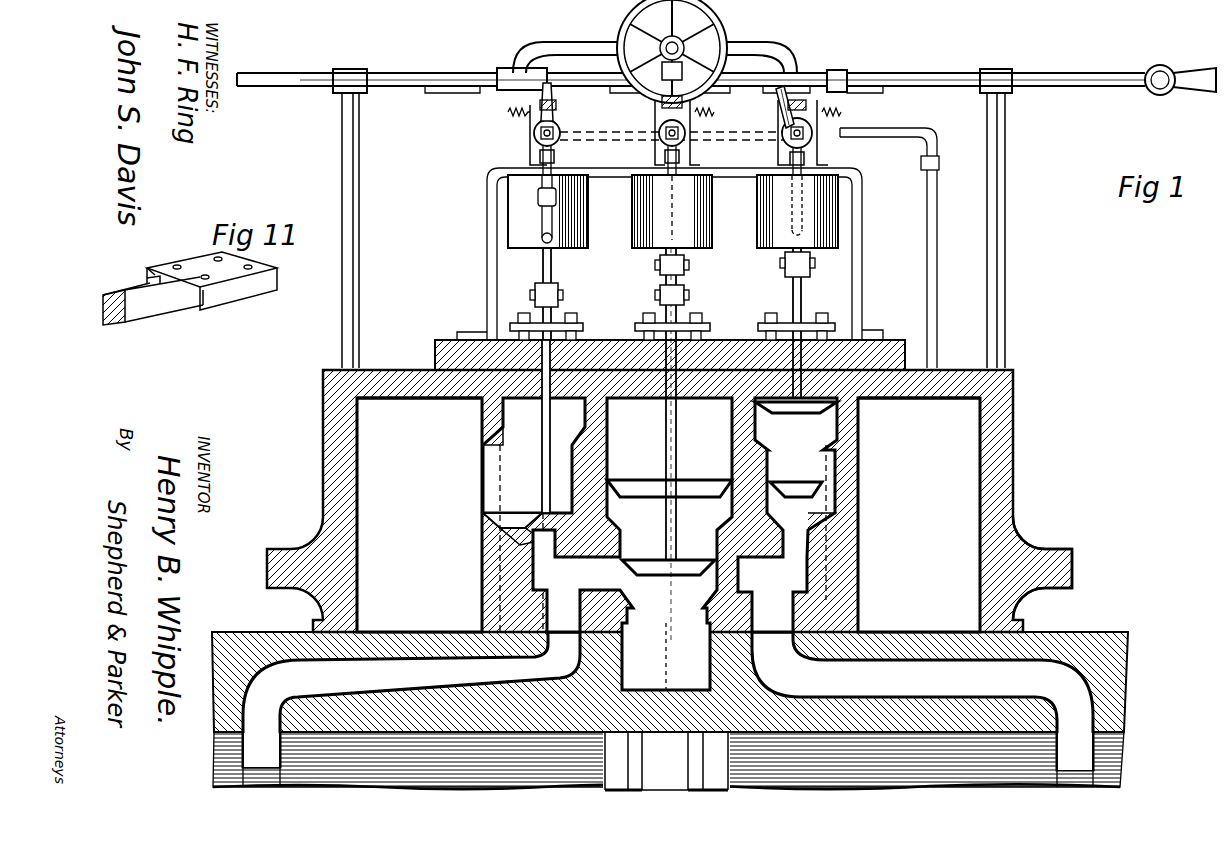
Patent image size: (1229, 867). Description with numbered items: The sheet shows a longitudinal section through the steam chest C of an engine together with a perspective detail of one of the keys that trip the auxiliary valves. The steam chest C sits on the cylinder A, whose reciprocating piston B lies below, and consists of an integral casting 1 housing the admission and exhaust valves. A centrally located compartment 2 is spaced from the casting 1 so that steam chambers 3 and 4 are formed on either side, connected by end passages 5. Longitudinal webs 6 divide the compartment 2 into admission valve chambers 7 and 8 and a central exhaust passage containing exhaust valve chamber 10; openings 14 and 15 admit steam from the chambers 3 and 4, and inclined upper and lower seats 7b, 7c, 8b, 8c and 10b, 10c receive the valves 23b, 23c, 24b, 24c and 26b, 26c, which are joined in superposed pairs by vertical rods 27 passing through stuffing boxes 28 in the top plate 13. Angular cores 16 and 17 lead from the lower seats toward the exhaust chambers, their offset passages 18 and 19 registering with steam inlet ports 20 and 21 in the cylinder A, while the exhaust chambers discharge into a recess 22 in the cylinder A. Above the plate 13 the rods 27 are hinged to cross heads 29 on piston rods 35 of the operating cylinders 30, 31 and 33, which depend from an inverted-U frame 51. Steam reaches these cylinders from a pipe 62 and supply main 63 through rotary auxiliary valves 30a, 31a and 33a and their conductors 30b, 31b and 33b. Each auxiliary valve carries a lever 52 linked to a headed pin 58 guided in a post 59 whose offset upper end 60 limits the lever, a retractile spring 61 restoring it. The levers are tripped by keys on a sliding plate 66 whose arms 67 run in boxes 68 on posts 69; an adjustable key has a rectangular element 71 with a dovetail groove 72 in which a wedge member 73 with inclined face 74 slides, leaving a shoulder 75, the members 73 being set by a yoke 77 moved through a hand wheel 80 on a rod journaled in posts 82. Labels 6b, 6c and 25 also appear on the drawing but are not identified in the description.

In FIG. 1, the casting 1 is at (323, 490).
In FIG. 1, the compartment 2 is at (840, 531).
In FIG. 1, the steam chamber 3 is at (1090, 410).
In FIG. 1, the steam chamber 4 is at (940, 575).
In FIG. 1, the passages 5 is at (495, 140).
In FIG. 1, the longitudinal webs 6 is at (672, 760).
In FIG. 1, the passage 6b is at (625, 425).
In FIG. 1, the passage arrow 6c is at (600, 150).
In FIG. 1, the admission valve chamber 7 is at (810, 495).
In FIG. 1, the upper inclined valve seat 7b is at (840, 440).
In FIG. 1, the lower inclined valve seat 7c is at (780, 540).
In FIG. 1, the admission valve chamber 8 is at (545, 505).
In FIG. 1, the upper inclined valve seat 8b is at (500, 436).
In FIG. 1, the lower inclined valve seat 8c is at (520, 528).
In FIG. 1, the exhaust valve chamber 10 is at (632, 544).
In FIG. 1, the upper inclined valve seat 10b is at (722, 525).
In FIG. 1, the lower inclined valve seat 10c is at (660, 625).
In FIG. 1, the top plate 13 is at (435, 343).
In FIG. 1, the opening 14 is at (830, 488).
In FIG. 1, the opening 15 is at (483, 455).
In FIG. 1, the angular longitudinal core 16 is at (772, 574).
In FIG. 1, the angular longitudinal core 17 is at (576, 573).
In FIG. 1, the off-set passage 18 is at (775, 625).
In FIG. 1, the off-set passage 19 is at (573, 602).
In FIG. 1, the steam inlet port 20 is at (922, 701).
In FIG. 1, the steam inlet port 21 is at (411, 699).
In FIG. 1, the recess 22 is at (666, 656).
In FIG. 1, the valve 23b is at (782, 450).
In FIG. 1, the valve 23c is at (815, 472).
In FIG. 1, the valve 24b is at (512, 464).
In FIG. 1, the valve 24c is at (530, 520).
In FIG. 1, the port 25 is at (562, 479).
In FIG. 1, the valve 26b is at (650, 483).
In FIG. 1, the valve 26c is at (650, 510).
In FIG. 1, the vertical rods 27 is at (680, 470).
In FIG. 1, the stuffing boxes 28 is at (588, 320).
In FIG. 1, the cross head 29 is at (822, 270).
In FIG. 1, the valve operating cylinder 30 is at (797, 211).
In FIG. 1, the rotary auxiliary valve 30a is at (778, 148).
In FIG. 1, the conductor 30b is at (790, 162).
In FIG. 1, the valve operating cylinder 31 is at (548, 211).
In FIG. 1, the rotary auxiliary valve 31a is at (535, 152).
In FIG. 1, the conductor 31b is at (534, 201).
In FIG. 1, the valve operating cylinder 33 is at (672, 211).
In FIG. 1, the rotary auxiliary valve 33a is at (686, 140).
In FIG. 1, the conductor 33b is at (665, 160).
In FIG. 1, the piston rod 35 is at (555, 268).
In FIG. 1, the frame 51 is at (487, 232).
In FIG. 1, the lever 52 is at (780, 118).
In FIG. 1, the headed pin 58 is at (875, 108).
In FIG. 1, the vertical post 59 is at (700, 128).
In FIG. 1, the offset upper end 60 is at (655, 104).
In FIG. 1, the retractile spring 61 is at (858, 118).
In FIG. 1, the pipe 62 is at (927, 232).
In FIG. 1, the auxiliary valve supply main 63 is at (888, 138).
In FIG. 1, the sliding plate 66 is at (522, 78).
In FIG. 1, the horizontal arms 67 is at (412, 95).
In FIG. 1, the bearings or boxes 68 is at (672, 97).
In FIG. 1, the vertical supporting posts 69 is at (360, 195).
In FIG. 11, the stationary rectangular element 71 is at (280, 277).
In FIG. 11, the dovetail groove 72 is at (147, 279).
In FIG. 11, the wedge shaped member 73 is at (162, 310).
In FIG. 11, the inclined face 74 is at (110, 293).
In FIG. 11, the shoulder 75 is at (148, 268).
In FIG. 1, the yoke 77 is at (575, 42).
In FIG. 1, the hand wheel 80 is at (625, 28).
In FIG. 1, the supporting posts 82 is at (725, 73).
In FIG. 1, the cylinder A is at (1128, 678).
In FIG. 1, the reciprocating piston B is at (800, 760).
In FIG. 1, the steam chest C is at (1015, 473).